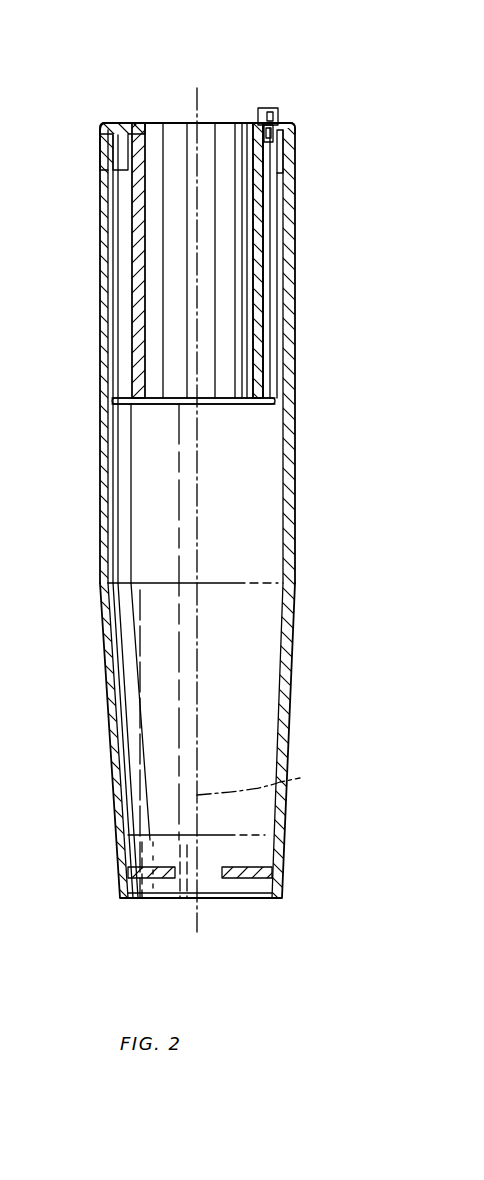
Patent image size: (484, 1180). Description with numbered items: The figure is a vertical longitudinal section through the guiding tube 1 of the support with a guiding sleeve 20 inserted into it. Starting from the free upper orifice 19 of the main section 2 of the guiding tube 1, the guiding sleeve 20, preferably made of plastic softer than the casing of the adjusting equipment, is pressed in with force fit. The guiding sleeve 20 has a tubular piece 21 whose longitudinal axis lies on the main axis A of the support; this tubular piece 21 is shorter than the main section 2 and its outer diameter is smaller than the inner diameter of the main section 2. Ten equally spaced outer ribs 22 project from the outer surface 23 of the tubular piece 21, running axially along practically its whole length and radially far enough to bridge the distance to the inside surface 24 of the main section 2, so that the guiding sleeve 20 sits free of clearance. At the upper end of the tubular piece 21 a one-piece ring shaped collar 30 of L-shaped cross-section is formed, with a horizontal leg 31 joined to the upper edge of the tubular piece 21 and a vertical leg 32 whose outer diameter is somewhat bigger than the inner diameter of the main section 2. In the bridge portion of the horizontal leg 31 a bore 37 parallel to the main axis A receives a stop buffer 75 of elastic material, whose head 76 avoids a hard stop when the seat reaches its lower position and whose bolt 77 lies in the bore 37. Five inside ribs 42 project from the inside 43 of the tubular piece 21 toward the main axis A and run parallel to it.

The guiding tube 1 is at (292, 657).
The main section 2 is at (295, 490).
The upper orifice 19 is at (100, 131).
The guiding sleeve 20 is at (163, 66).
The tubular piece 21 is at (270, 392).
The outer ribs 22 is at (264, 250).
The outer surface 23 is at (270, 340).
The inside surface 24 is at (110, 556).
The ring shaped collar 30 is at (124, 120).
The horizontal leg 31 is at (297, 132).
The vertical leg 32 is at (292, 226).
The bore 37 is at (294, 178).
The inside ribs 42 is at (228, 122).
The inside 43 is at (112, 452).
The stop buffer 75 is at (276, 115).
The head 76 is at (292, 128).
The bolt 77 is at (272, 108).
The main axis A is at (259, 779).